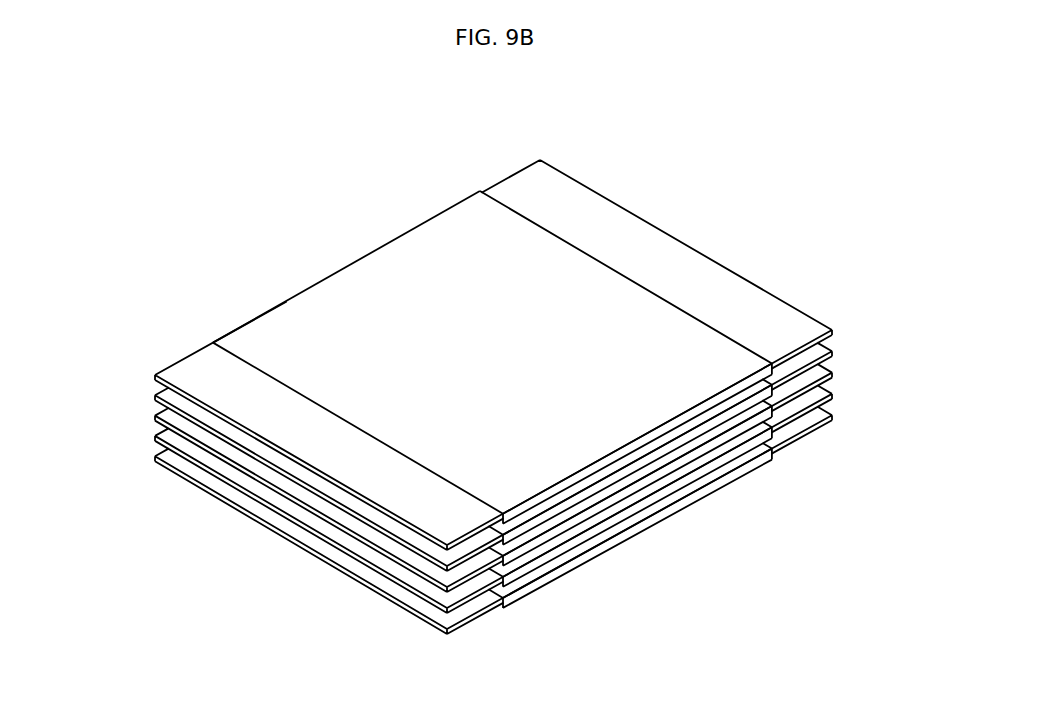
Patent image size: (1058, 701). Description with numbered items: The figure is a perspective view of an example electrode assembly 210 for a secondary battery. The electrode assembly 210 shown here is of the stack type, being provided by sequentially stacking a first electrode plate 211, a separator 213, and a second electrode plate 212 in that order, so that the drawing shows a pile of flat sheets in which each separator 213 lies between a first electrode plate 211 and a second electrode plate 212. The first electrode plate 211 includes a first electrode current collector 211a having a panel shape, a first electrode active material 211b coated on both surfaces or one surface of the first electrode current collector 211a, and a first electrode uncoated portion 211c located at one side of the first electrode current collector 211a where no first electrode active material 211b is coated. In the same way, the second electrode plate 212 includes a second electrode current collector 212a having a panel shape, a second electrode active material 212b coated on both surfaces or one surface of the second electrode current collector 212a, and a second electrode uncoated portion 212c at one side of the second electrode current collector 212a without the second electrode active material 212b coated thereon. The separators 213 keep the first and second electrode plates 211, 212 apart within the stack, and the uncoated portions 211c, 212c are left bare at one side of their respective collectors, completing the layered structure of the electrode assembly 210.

The electrode assembly 210 is at (758, 177).
The first electrode plate 211 is at (173, 358).
The first electrode current collector 211a is at (275, 303).
The first electrode active material 211b is at (342, 298).
The first electrode uncoated portion 211c is at (205, 368).
The second electrode plate 212 is at (836, 337).
The second electrode current collector 212a is at (829, 420).
The second electrode active material 212b is at (732, 395).
The second electrode uncoated portion 212c is at (802, 346).
The separator 213 is at (183, 430).